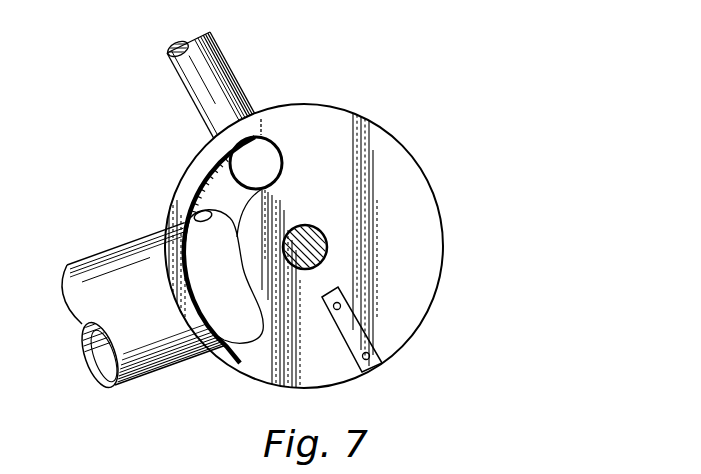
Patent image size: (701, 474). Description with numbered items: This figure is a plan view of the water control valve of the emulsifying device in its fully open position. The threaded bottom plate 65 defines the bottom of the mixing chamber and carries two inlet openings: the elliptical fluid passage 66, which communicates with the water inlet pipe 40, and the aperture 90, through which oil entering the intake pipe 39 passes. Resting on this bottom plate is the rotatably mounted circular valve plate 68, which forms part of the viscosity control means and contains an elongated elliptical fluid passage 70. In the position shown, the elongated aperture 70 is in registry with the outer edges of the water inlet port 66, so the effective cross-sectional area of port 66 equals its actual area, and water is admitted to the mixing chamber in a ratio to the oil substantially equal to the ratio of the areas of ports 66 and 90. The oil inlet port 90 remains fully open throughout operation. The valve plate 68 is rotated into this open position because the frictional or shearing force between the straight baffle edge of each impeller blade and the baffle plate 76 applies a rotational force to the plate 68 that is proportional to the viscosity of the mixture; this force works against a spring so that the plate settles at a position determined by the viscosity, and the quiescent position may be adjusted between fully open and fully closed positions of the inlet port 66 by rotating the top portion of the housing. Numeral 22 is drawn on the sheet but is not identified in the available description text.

The shaft opening 22 is at (309, 224).
The intake pipe 39 is at (218, 51).
The fluid inlet pipe 40 is at (99, 388).
The bottom plate 65 is at (215, 188).
The elliptical fluid passage 66 is at (194, 214).
The valve plate 68 is at (415, 162).
The elongated elliptical fluid passage 70 is at (229, 296).
The baffle plate 76 is at (367, 365).
The aperture 90 is at (259, 165).